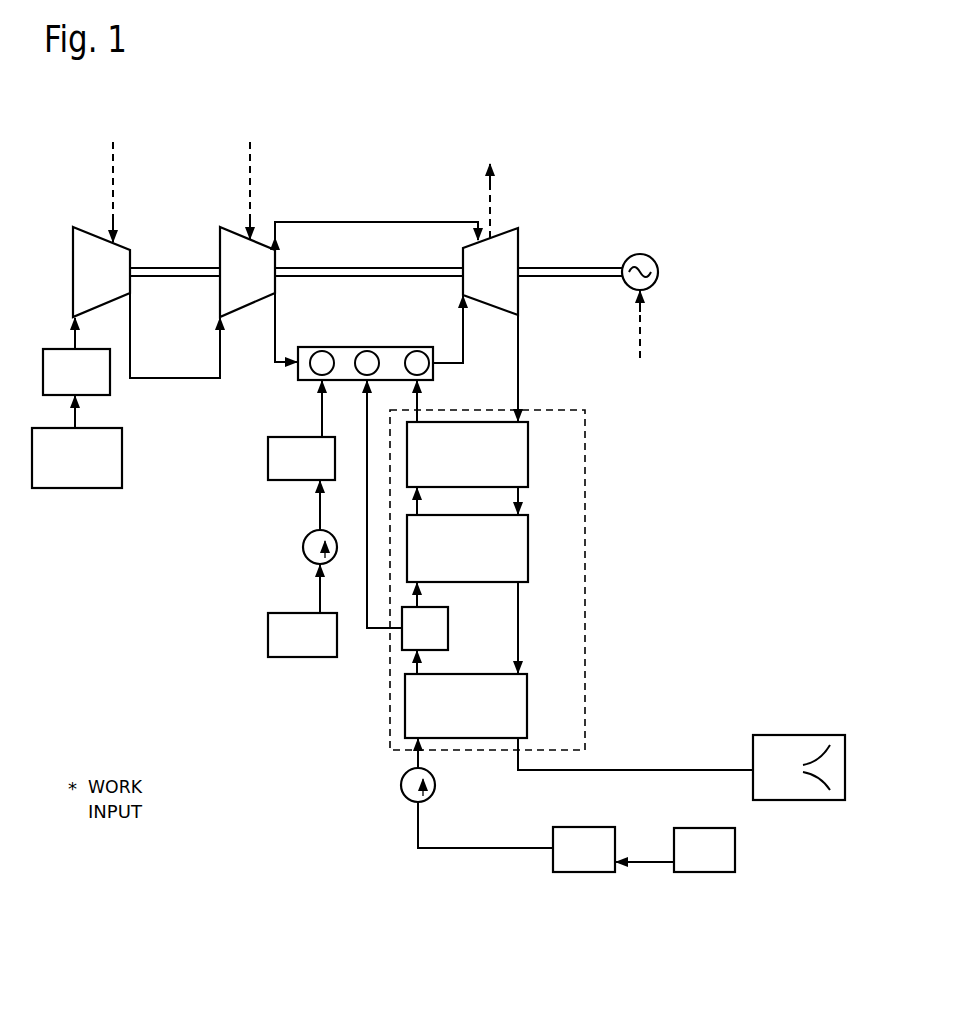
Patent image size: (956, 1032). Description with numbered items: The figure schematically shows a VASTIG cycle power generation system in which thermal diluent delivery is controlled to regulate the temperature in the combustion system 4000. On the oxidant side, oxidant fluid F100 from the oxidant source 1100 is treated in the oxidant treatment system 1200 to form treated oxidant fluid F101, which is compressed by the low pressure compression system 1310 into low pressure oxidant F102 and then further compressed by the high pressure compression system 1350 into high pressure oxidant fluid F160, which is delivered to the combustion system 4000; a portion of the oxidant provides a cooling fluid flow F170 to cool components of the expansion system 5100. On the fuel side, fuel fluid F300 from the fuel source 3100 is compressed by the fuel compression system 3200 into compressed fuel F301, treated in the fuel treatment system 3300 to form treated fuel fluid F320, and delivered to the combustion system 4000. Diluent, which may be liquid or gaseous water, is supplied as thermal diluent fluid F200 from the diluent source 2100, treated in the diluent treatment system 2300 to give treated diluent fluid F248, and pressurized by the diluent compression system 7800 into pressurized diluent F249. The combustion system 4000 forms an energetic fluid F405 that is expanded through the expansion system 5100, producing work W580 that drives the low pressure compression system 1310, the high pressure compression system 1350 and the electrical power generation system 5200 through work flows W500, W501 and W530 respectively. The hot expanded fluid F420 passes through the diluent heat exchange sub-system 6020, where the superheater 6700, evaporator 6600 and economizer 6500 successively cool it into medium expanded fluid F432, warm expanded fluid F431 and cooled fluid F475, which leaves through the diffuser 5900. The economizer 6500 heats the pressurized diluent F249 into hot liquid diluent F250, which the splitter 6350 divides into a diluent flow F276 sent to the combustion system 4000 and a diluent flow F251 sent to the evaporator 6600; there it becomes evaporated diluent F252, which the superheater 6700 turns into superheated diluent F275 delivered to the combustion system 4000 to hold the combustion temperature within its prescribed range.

The low pressure compression system 1310 is at (73, 263).
The high pressure compression system 1350 is at (220, 263).
The expansion system 5100 is at (478, 302).
The electrical power generation system 5200 is at (653, 257).
The work flow W530 is at (647, 305).
The work W580 is at (488, 198).
The work flow W500 is at (110, 210).
The work flow W501 is at (247, 210).
The cooling fluid flow F170 is at (327, 222).
The high pressure oxidant fluid F160 is at (276, 330).
The low pressure oxidant F102 is at (133, 362).
The treated oxidant fluid F101 is at (77, 346).
The oxidant treatment system 1200 is at (88, 396).
The oxidant fluid F100 is at (72, 412).
The oxidant source 1100 is at (70, 488).
The combustion system 4000 is at (390, 347).
The energetic fluid F405 is at (462, 330).
The expanded fluid F420 is at (516, 342).
The treated fuel fluid F320 is at (320, 430).
The superheated diluent F275 is at (445, 403).
The diluent flow F276 is at (367, 620).
The fuel treatment system 3300 is at (268, 466).
The compressed fuel F301 is at (320, 502).
The fuel compression system 3200 is at (304, 552).
The fuel fluid F300 is at (320, 590).
The fuel source 3100 is at (287, 657).
The diluent heat exchange sub-system 6020 is at (538, 412).
The superheater 6700 is at (528, 468).
The evaporated diluent F252 is at (450, 513).
The medium expanded fluid F432 is at (520, 498).
The evaporator 6600 is at (528, 563).
The diluent flow F251 is at (418, 600).
The warm expanded fluid F431 is at (519, 600).
The splitter 6350 is at (448, 648).
The hot liquid diluent F250 is at (418, 668).
The economizer 6500 is at (527, 712).
The cooled fluid F475 is at (660, 770).
The diffuser 5900 is at (790, 800).
The pressurized diluent fluid F249 is at (415, 762).
The diluent compression system 7800 is at (435, 782).
The treated diluent fluid F248 is at (416, 814).
The diluent treatment system 2300 is at (560, 872).
The thermal diluent fluid F200 is at (658, 866).
The diluent source 2100 is at (682, 872).